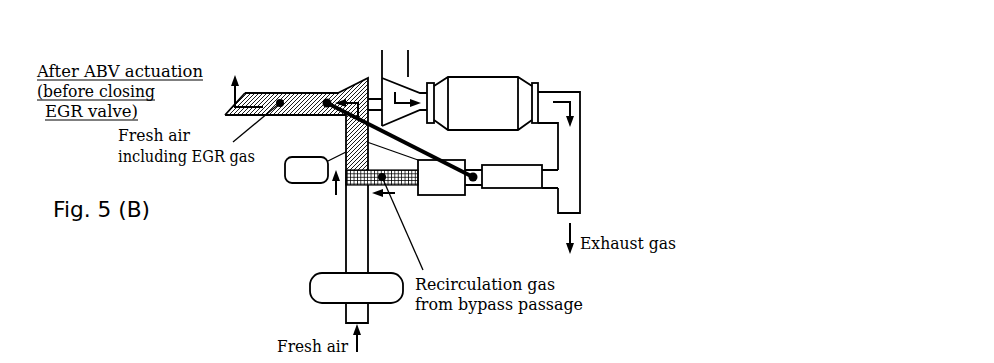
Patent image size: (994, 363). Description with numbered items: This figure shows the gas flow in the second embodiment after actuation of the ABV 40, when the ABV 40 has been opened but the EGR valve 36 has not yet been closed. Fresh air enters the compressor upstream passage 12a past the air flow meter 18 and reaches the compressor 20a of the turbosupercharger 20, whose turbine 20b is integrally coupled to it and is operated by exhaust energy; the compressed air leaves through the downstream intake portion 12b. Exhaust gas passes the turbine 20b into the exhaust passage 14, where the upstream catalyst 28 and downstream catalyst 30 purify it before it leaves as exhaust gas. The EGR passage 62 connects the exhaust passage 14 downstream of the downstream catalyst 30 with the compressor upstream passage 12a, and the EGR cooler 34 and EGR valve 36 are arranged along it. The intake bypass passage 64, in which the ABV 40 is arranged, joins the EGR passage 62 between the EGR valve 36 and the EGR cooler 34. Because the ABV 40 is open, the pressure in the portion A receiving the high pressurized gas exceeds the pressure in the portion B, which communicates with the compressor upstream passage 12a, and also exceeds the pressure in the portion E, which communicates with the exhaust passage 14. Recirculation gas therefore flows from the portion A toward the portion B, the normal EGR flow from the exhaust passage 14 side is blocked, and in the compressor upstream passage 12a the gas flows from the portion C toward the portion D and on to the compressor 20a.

The compressor upstream passage 12a is at (346, 260).
The intake passage downstream of compressor 12b is at (292, 98).
The exhaust passage 14 is at (562, 92).
The air flow meter 18 is at (310, 290).
The turbosupercharger 20 is at (386, 88).
The compressor 20a is at (352, 78).
The turbine 20b is at (408, 64).
The upstream catalyst 28 is at (483, 82).
The downstream catalyst 30 is at (482, 77).
The EGR cooler 34 is at (517, 189).
The EGR valve 36 is at (438, 196).
The ABV 40 is at (288, 182).
The EGR passage 62 is at (550, 190).
The intake bypass passage 64 is at (345, 132).
The portion A is at (477, 186).
The portion B is at (410, 186).
The portion C is at (346, 225).
The portion D is at (341, 147).
The portion E is at (547, 178).